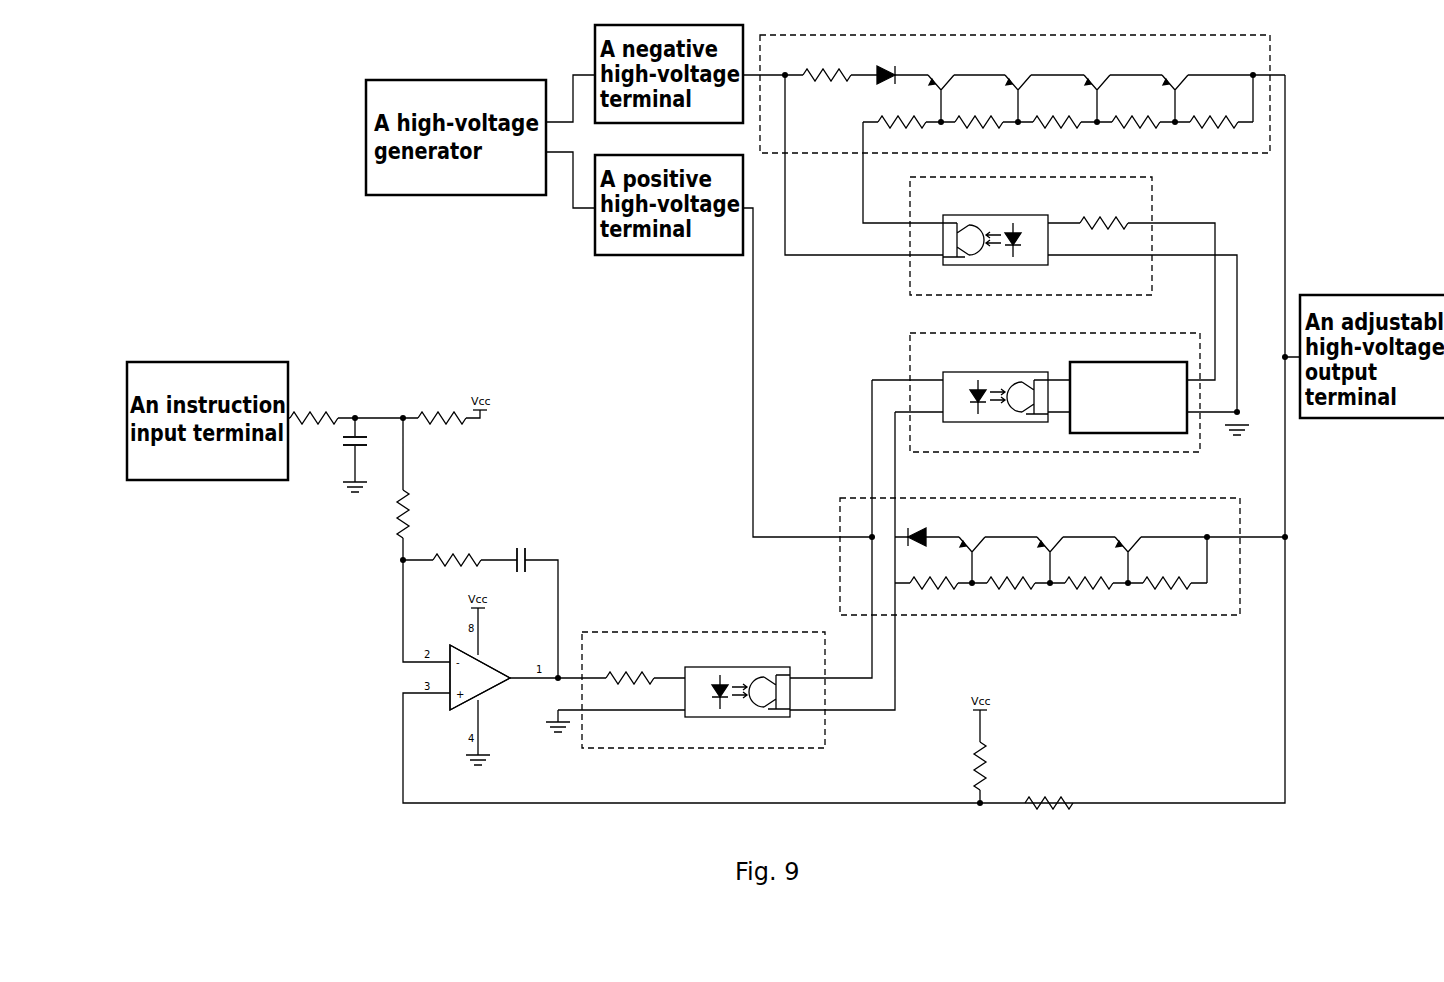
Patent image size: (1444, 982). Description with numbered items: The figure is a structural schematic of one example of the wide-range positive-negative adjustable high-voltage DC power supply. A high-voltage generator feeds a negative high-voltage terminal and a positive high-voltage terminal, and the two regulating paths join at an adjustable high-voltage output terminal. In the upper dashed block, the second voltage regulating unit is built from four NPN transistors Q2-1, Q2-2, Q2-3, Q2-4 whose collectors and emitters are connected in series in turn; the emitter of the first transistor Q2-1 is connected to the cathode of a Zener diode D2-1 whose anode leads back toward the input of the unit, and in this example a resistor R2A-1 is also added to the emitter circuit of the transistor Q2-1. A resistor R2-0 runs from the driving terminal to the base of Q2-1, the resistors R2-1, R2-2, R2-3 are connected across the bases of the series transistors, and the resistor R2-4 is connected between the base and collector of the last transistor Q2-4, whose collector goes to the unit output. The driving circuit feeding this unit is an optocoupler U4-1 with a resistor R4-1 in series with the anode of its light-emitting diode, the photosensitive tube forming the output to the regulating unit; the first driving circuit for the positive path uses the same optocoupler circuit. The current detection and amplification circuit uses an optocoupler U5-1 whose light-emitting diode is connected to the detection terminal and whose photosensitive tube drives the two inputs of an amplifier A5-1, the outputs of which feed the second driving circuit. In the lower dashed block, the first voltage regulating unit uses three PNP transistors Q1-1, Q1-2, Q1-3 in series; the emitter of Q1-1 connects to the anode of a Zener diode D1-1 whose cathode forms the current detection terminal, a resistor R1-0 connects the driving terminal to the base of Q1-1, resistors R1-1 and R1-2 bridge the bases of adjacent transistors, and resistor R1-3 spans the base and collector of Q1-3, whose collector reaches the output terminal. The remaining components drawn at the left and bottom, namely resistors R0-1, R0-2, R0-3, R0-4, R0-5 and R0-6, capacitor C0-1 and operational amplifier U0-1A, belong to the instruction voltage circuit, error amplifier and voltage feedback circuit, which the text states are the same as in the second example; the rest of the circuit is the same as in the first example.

The resistor R2A-1 is at (827, 68).
The Zener diode D2-1 is at (889, 63).
The NPN transistor Q2-1 is at (965, 86).
The NPN transistor Q2-2 is at (1043, 86).
The NPN transistor Q2-3 is at (1121, 86).
The NPN transistor Q2-4 is at (1222, 86).
The resistor R2-0 is at (902, 115).
The resistor R2-1 is at (979, 115).
The resistor R2-2 is at (1057, 115).
The resistor R2-3 is at (1136, 115).
The resistor R2-4 is at (1214, 115).
The optocoupler U4-1 is at (866, 453).
The resistor R4-1 is at (867, 439).
The optocoupler U5-1 is at (995, 386).
The amplifier A5-1 is at (1128, 389).
The Zener diode D1-1 is at (931, 525).
The PNP transistor Q1-1 is at (996, 548).
The PNP transistor Q1-2 is at (1074, 548).
The PNP transistor Q1-3 is at (1198, 548).
The resistor R1-0 is at (933, 576).
The resistor R1-1 is at (1011, 576).
The resistor R1-2 is at (1089, 576).
The resistor R1-3 is at (1167, 576).
The resistor R0-1 is at (314, 412).
The resistor R0-2 is at (442, 411).
The capacitor C0-1 is at (441, 504).
The resistor R0-3 is at (416, 514).
The resistor R0-4 is at (457, 553).
The operational amplifier U0-1A is at (487, 677).
The resistor R0-5 is at (993, 764).
The resistor R0-6 is at (1049, 795).